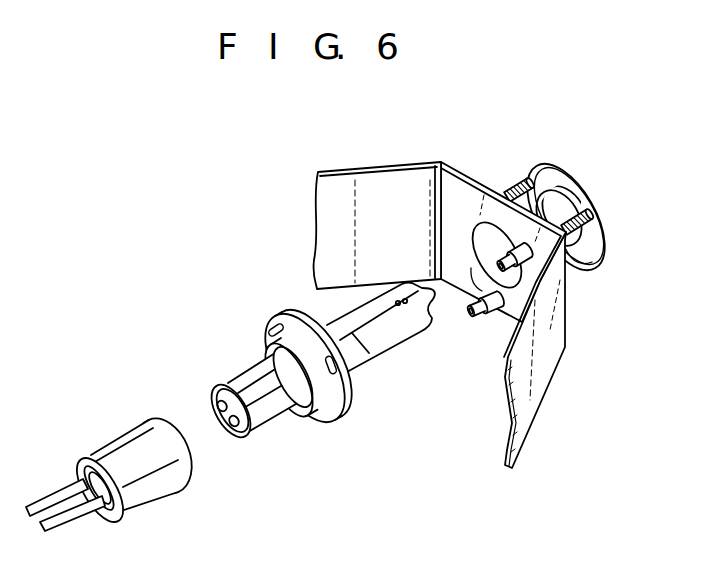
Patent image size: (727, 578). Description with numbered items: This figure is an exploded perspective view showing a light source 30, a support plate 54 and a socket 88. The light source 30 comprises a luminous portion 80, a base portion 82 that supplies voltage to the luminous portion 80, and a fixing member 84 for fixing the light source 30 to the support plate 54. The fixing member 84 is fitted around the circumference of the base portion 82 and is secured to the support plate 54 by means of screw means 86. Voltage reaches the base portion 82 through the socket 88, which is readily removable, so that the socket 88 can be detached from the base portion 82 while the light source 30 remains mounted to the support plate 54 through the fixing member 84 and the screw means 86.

The light source 30 is at (193, 362).
The support plate 54 is at (543, 372).
The luminous portion 80 is at (392, 349).
The base portion 82 is at (265, 413).
The fixing member 84 is at (328, 413).
The screw means 86 is at (518, 188).
The socket 88 is at (153, 483).